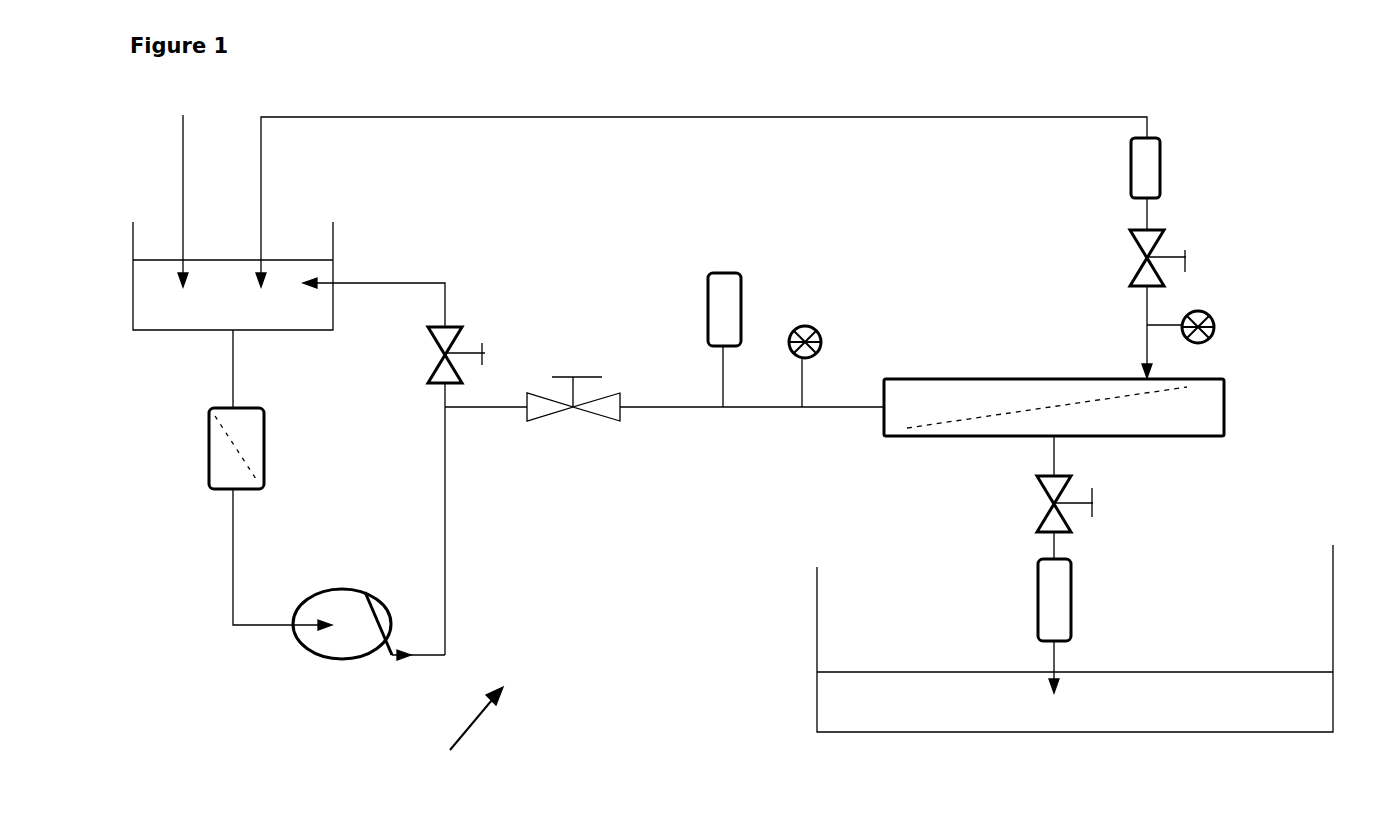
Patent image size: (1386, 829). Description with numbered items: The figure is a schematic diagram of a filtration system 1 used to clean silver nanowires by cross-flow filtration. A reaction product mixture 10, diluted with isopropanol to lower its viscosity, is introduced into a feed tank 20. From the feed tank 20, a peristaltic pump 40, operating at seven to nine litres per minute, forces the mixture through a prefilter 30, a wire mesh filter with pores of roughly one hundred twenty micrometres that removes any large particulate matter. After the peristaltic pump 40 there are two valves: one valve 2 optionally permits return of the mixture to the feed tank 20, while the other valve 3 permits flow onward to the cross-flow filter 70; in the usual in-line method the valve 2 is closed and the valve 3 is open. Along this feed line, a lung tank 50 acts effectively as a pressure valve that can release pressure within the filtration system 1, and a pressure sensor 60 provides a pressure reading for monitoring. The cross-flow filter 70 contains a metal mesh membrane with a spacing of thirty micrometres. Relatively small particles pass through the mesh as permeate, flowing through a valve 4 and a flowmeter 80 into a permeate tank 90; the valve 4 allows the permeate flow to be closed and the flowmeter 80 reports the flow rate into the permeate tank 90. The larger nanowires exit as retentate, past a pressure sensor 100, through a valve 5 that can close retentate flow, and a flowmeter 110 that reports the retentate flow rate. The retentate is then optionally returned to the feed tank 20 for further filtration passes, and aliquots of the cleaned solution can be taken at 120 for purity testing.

The filtration system 1 is at (470, 736).
The valve 2 is at (458, 348).
The valve 3 is at (573, 421).
The valve 4 is at (1076, 504).
The valve 5 is at (1171, 258).
The reaction product mixture 10 is at (168, 180).
The feed tank 20 is at (233, 276).
The prefilter 30 is at (257, 448).
The peristaltic pump 40 is at (342, 648).
The lung tank 50 is at (707, 316).
The pressure sensor 60 is at (795, 355).
The cross-flow filter 70 is at (1073, 407).
The flowmeter 80 is at (1072, 600).
The permeate tank 90 is at (1075, 638).
The pressure sensor 100 is at (1210, 327).
The flowmeter 110 is at (1180, 168).
The aliquot sampling point 120 is at (701, 187).